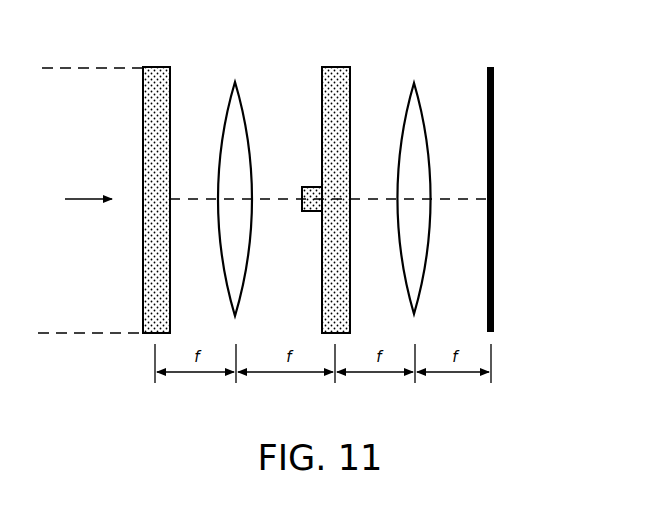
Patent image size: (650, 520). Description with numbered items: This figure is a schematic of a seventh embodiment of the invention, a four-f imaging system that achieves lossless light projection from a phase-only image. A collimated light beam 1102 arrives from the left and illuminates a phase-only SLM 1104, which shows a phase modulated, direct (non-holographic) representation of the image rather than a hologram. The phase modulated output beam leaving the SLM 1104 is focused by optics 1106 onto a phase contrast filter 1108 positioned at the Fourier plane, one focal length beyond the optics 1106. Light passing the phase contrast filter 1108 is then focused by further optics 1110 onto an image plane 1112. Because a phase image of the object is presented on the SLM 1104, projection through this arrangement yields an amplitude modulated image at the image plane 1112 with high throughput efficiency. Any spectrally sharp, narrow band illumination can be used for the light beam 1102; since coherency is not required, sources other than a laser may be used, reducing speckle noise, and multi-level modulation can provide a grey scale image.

The collimated light beam 1102 is at (88, 197).
The phase-only SLM 1104 is at (157, 66).
The optics 1106 is at (235, 82).
The phase contrast filter 1108 is at (337, 66).
The further optics 1110 is at (414, 81).
The image plane 1112 is at (492, 67).